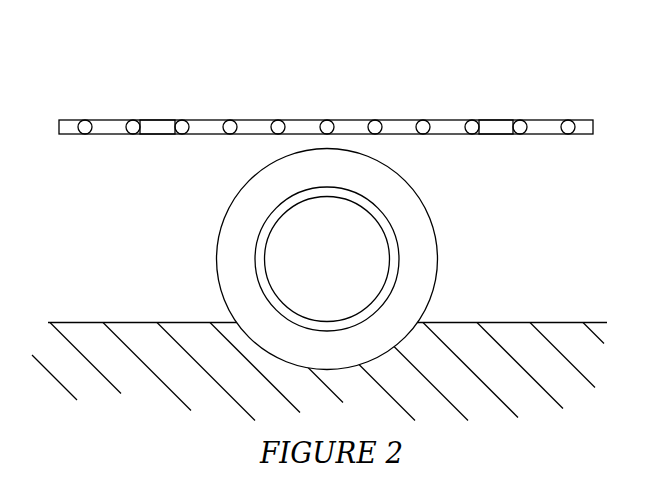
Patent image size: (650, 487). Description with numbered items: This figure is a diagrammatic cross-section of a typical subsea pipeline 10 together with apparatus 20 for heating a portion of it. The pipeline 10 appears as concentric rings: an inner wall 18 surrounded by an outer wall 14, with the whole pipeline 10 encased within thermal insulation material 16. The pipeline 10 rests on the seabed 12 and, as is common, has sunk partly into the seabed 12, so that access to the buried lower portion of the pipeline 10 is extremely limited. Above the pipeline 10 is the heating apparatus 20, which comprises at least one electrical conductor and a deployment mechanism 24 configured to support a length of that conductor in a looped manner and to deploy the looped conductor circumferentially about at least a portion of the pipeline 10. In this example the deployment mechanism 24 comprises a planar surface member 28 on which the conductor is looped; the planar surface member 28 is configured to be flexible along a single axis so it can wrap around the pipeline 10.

The subsea pipeline 10 is at (311, 259).
The seabed 12 is at (145, 322).
The outer wall 14 is at (388, 220).
The thermal insulation material 16 is at (436, 232).
The inner wall 18 is at (273, 222).
The apparatus for heating a portion of subsea pipeline 20 is at (326, 67).
The deployment mechanism 24 is at (158, 128).
The planar surface member 28 is at (498, 125).